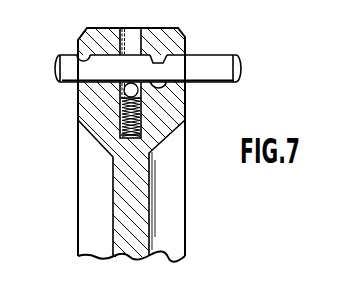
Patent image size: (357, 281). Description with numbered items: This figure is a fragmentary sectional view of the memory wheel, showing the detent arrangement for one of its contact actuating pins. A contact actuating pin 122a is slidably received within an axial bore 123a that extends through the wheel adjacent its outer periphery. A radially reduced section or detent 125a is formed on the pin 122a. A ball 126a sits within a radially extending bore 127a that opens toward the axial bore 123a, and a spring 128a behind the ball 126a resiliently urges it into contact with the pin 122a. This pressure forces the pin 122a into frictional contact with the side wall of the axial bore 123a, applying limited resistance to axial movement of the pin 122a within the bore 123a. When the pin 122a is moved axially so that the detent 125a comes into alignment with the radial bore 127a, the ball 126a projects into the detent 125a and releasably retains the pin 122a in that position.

The contact actuating pin 122a is at (203, 63).
The axial bore 123a is at (78, 56).
The radially reduced section or detent 125a is at (161, 62).
The ball 126a is at (185, 106).
The radially extending bore 127a is at (125, 28).
The spring 128a is at (121, 112).